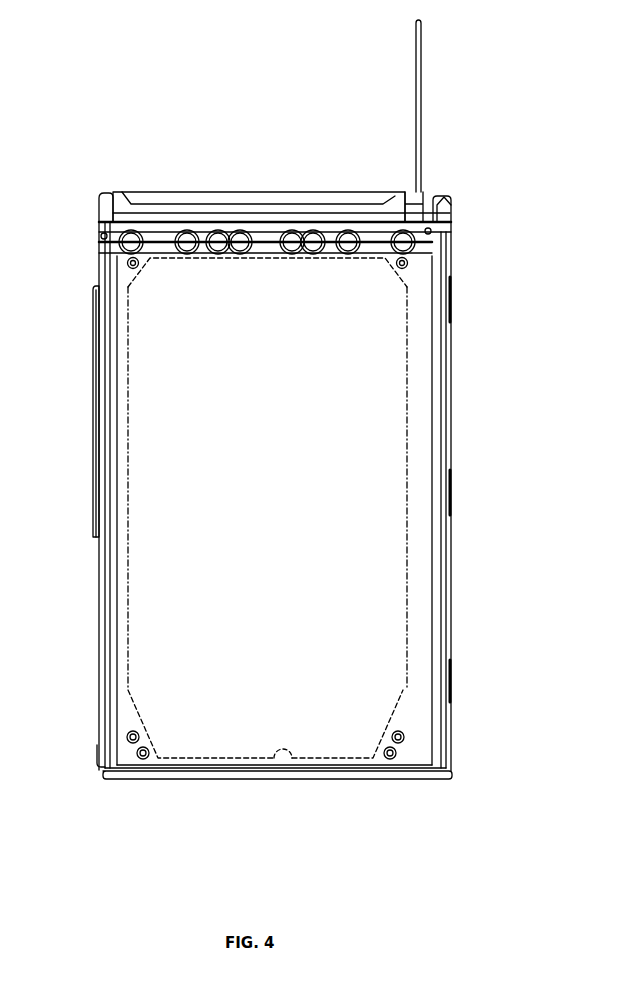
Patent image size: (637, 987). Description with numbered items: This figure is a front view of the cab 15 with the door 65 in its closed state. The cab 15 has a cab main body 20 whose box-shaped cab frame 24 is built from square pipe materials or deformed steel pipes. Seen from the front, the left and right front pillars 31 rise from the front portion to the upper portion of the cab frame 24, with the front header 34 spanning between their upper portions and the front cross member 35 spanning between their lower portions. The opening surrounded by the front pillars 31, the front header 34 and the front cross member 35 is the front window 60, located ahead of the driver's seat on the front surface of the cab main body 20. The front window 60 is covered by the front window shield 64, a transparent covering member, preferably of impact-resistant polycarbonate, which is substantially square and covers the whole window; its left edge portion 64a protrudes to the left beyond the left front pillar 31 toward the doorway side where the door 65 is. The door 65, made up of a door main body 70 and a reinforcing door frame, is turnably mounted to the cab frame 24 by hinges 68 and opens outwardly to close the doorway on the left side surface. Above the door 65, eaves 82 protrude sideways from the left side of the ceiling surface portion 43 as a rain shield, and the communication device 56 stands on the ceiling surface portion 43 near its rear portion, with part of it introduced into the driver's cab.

The cab 15 is at (262, 143).
The cab main body 20 is at (90, 184).
The cab frame 24 is at (90, 596).
The front pillar 31 is at (113, 240).
The front header 34 is at (270, 233).
The front cross member 35 is at (284, 768).
The ceiling surface portion 43 is at (218, 203).
The communication device 56 is at (383, 182).
The front window 60 is at (385, 595).
The front window shield 64 is at (388, 382).
The edge portion 64a is at (441, 337).
The door 65 is at (452, 449).
The hinge 68 is at (452, 300).
The door main body 70 is at (449, 543).
The eaves 82 is at (445, 218).